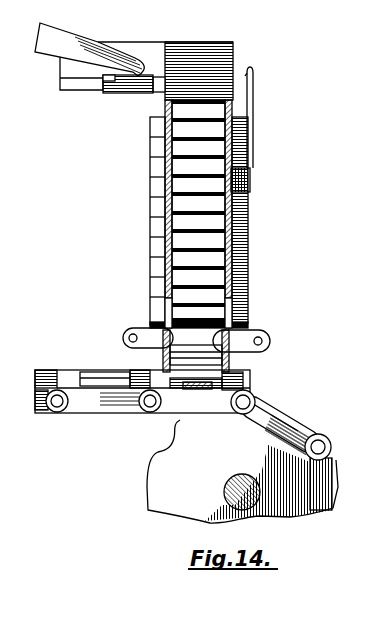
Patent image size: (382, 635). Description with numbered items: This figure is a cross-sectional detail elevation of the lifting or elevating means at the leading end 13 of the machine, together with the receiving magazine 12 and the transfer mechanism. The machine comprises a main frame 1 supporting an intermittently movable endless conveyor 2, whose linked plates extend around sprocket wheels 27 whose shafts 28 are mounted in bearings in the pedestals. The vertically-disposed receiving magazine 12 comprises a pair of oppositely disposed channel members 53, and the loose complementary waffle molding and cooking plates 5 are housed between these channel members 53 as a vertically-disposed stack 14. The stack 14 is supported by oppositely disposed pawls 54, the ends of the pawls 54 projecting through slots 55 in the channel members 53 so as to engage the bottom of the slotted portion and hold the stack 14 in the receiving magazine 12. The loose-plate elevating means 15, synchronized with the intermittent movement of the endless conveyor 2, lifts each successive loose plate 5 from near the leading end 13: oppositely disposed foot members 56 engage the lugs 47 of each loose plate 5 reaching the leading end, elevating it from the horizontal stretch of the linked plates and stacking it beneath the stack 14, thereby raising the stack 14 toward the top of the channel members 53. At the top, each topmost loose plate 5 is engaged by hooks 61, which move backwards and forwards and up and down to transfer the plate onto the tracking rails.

The hooks 61 is at (87, 44).
The main frame 1 is at (90, 90).
The lugs 47 is at (106, 86).
The receiving magazine 12 is at (167, 187).
The channel members 53 is at (160, 208).
The stack of loose plates 14 is at (243, 254).
The loose complementary waffle molding and cooking plates 5 is at (245, 272).
The slots 55 is at (166, 311).
The pawls 54 is at (140, 326).
The loose-plate elevating means 15 is at (278, 336).
The leading end 13 is at (301, 412).
The endless conveyor 2 is at (316, 425).
The foot members 56 is at (201, 390).
The sprocket wheels 27 is at (156, 495).
The shafts 28 is at (226, 490).